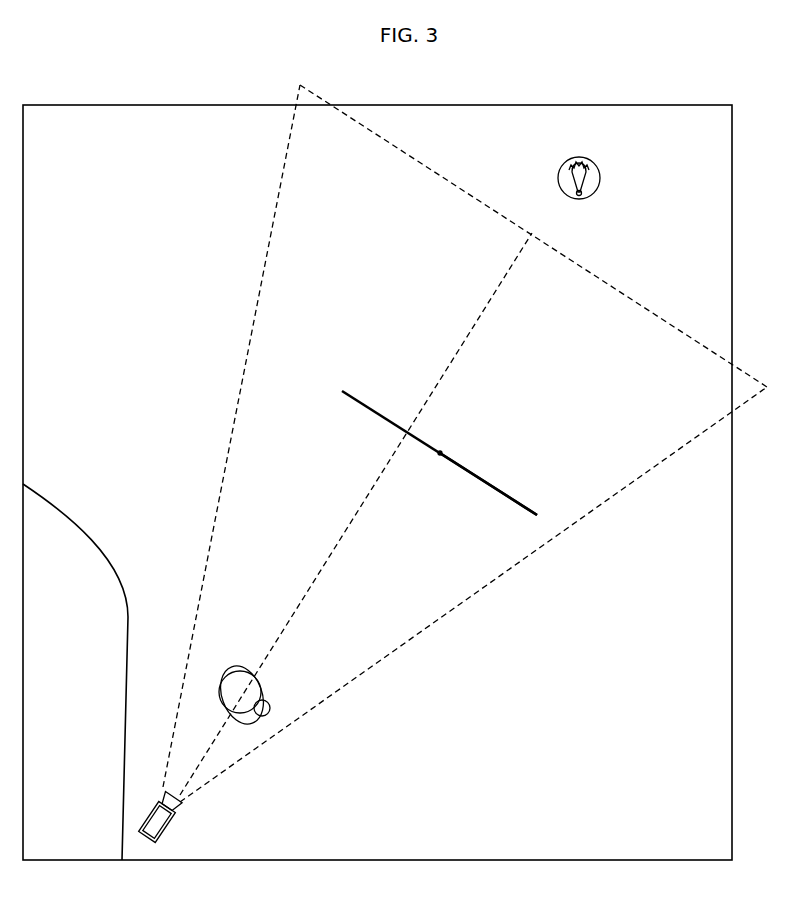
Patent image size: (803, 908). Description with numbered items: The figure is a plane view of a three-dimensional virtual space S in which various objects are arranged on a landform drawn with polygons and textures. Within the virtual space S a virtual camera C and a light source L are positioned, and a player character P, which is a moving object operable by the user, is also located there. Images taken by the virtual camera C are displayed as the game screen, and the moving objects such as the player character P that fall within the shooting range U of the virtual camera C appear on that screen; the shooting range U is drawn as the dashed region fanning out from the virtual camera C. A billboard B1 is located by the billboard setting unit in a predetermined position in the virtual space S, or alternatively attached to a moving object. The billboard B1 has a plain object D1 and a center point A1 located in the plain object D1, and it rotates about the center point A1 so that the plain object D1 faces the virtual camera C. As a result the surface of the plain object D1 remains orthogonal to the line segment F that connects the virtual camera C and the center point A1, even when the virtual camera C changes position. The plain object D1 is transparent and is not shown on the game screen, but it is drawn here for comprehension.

The three-dimensional virtual space S is at (65, 146).
The light source L is at (596, 190).
The virtual camera C is at (165, 828).
The player character P is at (215, 662).
The shooting range U is at (457, 610).
The optical axis of camera F is at (347, 532).
The billboard B1 is at (360, 419).
The plain object D1 is at (505, 497).
The center point A1 is at (440, 453).